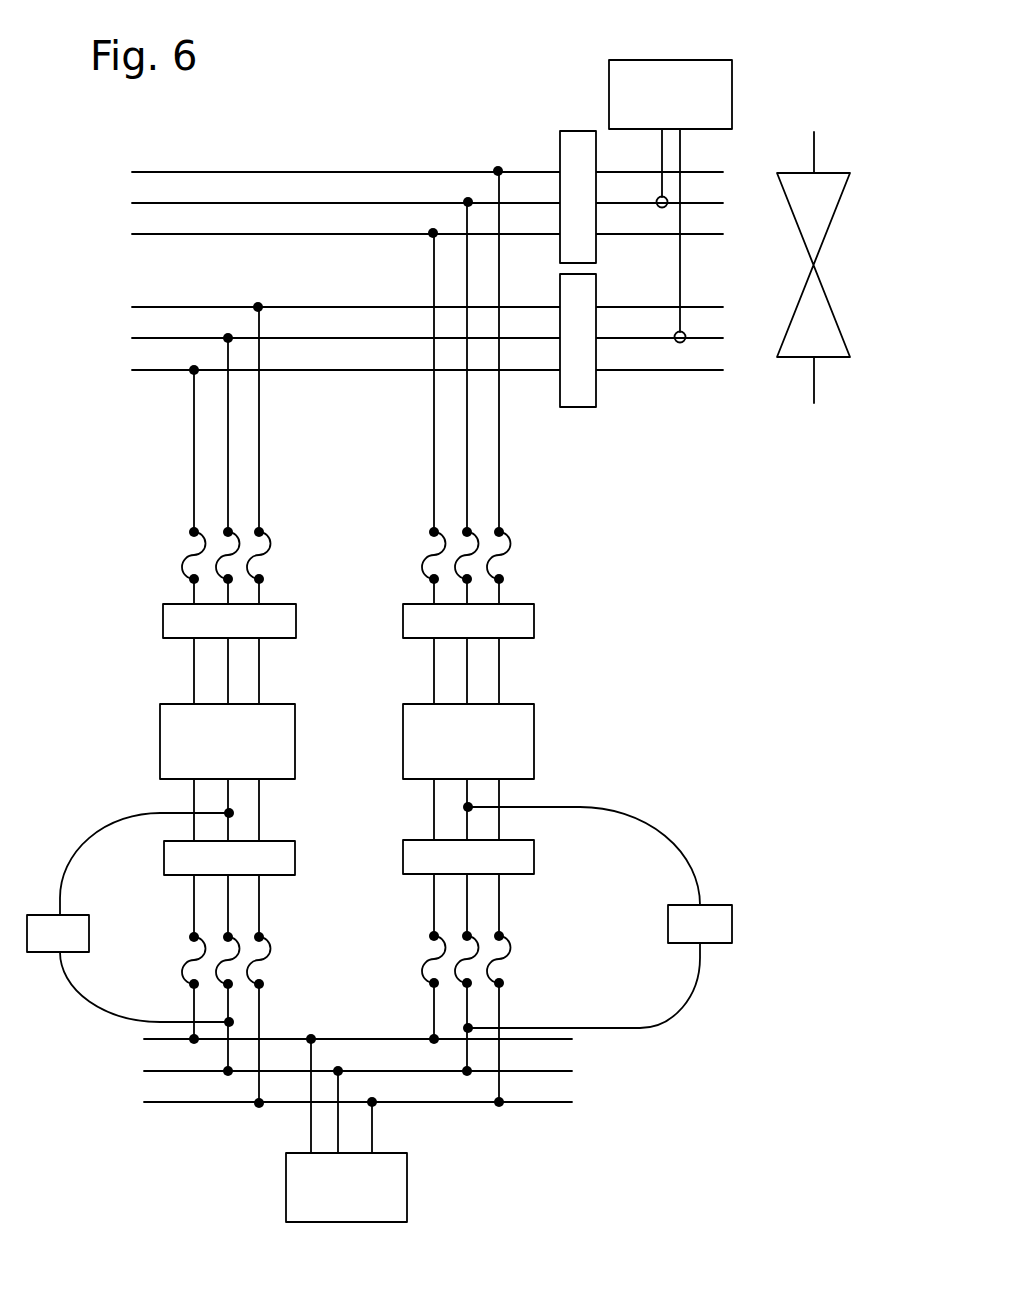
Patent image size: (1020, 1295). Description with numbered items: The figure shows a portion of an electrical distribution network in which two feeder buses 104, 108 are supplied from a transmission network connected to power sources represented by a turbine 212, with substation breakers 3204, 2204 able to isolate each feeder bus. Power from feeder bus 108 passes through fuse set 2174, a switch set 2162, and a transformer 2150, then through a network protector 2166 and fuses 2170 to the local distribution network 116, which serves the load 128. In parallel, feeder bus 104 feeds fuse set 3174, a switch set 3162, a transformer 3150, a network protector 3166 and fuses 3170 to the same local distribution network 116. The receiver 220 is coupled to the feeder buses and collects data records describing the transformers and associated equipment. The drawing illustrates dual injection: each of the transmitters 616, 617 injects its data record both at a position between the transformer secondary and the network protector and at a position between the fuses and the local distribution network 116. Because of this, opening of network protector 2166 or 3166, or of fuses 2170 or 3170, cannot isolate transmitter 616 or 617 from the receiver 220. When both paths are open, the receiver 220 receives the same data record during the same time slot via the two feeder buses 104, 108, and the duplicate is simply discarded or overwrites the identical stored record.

The feeder bus 104 is at (124, 172).
The feeder bus 108 is at (124, 307).
The local distribution network 116 is at (135, 1039).
The load 128 is at (346, 1187).
The receiver 220 is at (670, 94).
The turbine 212 is at (777, 403).
The substation breaker 3204 is at (573, 138).
The substation breaker 2204 is at (574, 400).
The fuse set 2174 is at (157, 527).
The fuse set 3174 is at (546, 527).
The switch set 2162 is at (229, 621).
The switch set 3162 is at (468, 621).
The transformer 2150 is at (227, 741).
The transformer 3150 is at (468, 741).
The network protector 2166 is at (229, 858).
The network protector 3166 is at (468, 857).
The fuse set 2170 is at (178, 925).
The fuse set 3170 is at (546, 924).
The transmitter 617 is at (130, 917).
The transmitter 616 is at (597, 917).